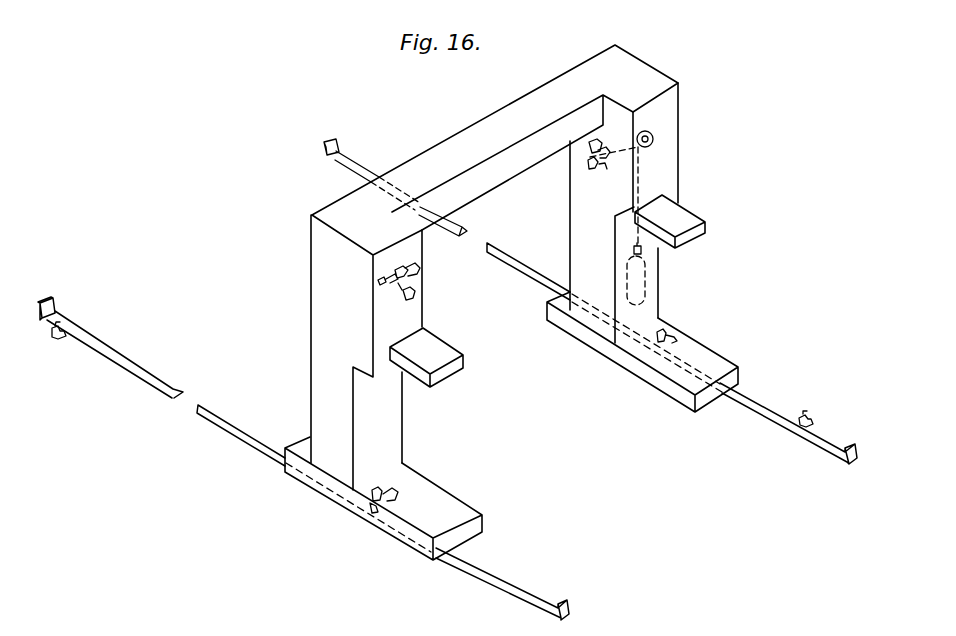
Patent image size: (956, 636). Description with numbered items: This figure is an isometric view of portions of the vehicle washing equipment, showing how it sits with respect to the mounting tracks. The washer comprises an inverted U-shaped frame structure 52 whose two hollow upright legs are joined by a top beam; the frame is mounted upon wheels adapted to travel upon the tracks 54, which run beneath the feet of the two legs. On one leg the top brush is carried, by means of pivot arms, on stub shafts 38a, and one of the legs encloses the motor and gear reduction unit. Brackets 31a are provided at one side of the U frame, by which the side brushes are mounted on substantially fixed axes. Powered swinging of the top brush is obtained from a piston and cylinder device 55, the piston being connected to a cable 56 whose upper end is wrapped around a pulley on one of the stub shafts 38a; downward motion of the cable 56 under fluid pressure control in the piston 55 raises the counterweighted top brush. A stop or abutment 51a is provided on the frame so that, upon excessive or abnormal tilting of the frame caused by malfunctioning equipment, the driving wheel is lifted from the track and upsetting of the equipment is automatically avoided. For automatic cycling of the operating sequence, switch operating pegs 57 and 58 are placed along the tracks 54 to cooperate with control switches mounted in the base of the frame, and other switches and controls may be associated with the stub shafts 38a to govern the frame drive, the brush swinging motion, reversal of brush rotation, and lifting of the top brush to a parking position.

The inverted U-shaped frame structure 52 is at (313, 243).
The stop or abutment 51a is at (300, 440).
The brackets 31a is at (438, 351).
The stub shafts 38a is at (423, 263).
The cable 56 is at (637, 236).
The piston and cylinder device 55 is at (646, 281).
The tracks 54 is at (243, 433).
The switch operating peg 57 is at (66, 340).
The switch operating peg 58 is at (809, 422).